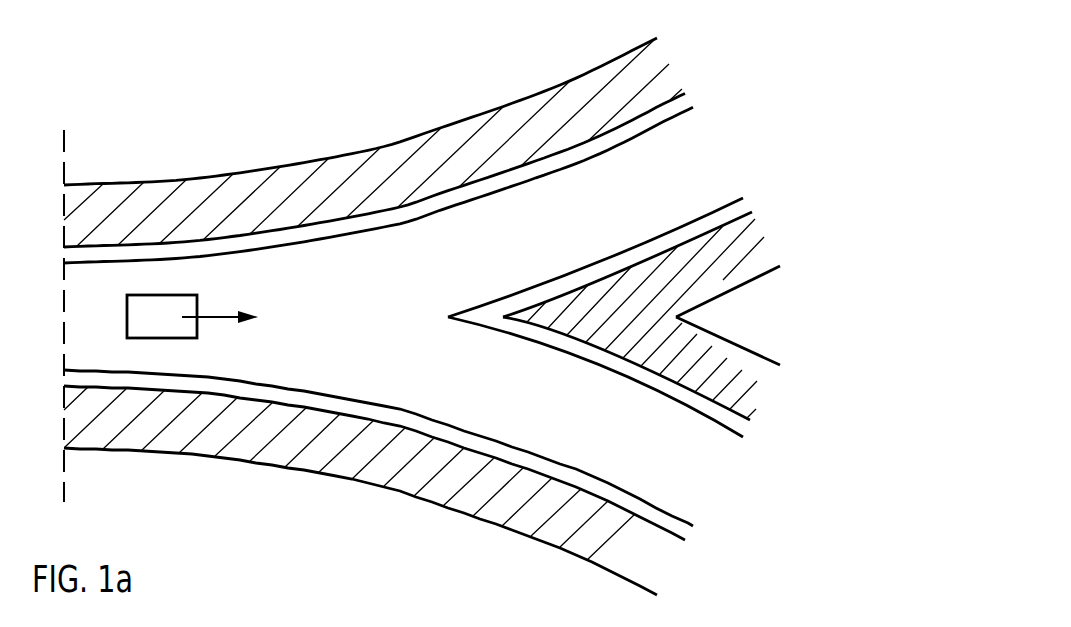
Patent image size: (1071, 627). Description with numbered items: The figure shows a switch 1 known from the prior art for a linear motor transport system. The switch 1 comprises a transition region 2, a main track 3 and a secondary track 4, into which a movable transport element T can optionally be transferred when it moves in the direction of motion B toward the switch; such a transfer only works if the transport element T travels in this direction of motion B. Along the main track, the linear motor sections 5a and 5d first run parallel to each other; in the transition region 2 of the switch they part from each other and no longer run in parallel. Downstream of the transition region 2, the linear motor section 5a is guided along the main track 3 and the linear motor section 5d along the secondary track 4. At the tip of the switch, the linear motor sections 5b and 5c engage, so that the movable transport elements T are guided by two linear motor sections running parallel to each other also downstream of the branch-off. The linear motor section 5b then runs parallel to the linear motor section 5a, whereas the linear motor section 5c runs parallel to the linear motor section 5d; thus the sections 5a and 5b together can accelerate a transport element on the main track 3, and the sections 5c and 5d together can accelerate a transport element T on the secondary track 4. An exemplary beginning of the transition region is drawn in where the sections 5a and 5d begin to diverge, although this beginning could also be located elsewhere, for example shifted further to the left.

The switch 1 is at (96, 53).
The transition region 2 is at (93, 305).
The main track 3 is at (536, 222).
The secondary track 4 is at (536, 412).
The linear motor section 5a is at (565, 88).
The linear motor section 5b is at (757, 280).
The linear motor section 5c is at (757, 354).
The linear motor section 5d is at (565, 545).
The movable transport element T is at (185, 302).
The direction of motion B is at (220, 317).